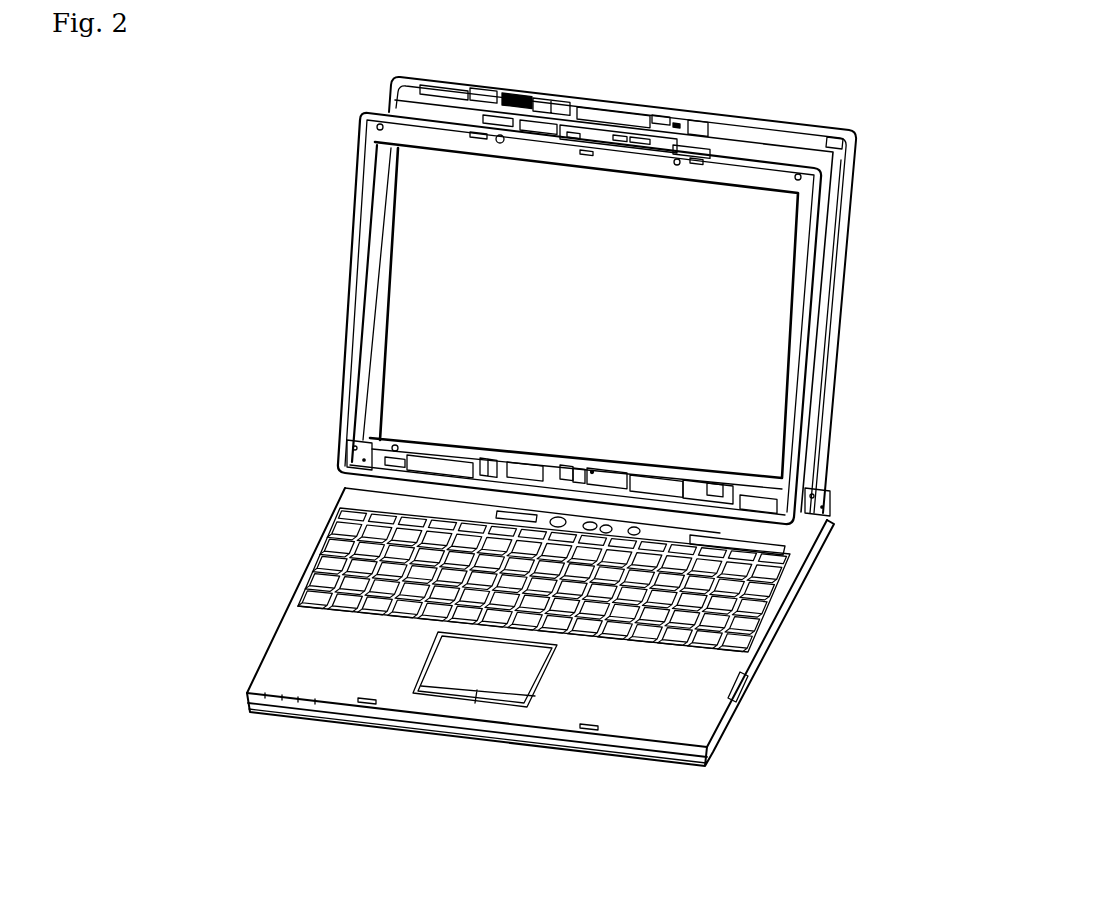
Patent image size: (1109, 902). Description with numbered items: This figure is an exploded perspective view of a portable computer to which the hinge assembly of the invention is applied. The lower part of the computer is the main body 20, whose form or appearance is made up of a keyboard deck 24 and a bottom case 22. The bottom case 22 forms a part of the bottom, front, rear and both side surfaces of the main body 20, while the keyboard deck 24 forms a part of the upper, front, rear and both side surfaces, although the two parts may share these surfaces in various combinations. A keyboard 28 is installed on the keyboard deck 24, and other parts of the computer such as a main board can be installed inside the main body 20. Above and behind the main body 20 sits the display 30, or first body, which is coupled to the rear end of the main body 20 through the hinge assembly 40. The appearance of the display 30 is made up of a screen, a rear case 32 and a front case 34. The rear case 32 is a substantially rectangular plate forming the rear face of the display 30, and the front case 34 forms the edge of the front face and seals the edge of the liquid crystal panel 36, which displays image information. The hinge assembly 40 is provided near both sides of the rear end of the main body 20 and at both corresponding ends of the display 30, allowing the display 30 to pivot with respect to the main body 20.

The main body 20 is at (508, 627).
The bottom case 22 is at (255, 705).
The keyboard deck 24 is at (280, 675).
The keyboard 28 is at (752, 615).
The display 30 is at (640, 293).
The rear case 32 is at (848, 185).
The front case 34 is at (798, 347).
The liquid crystal panel 36 is at (827, 265).
The hinge assembly 40 is at (360, 448).